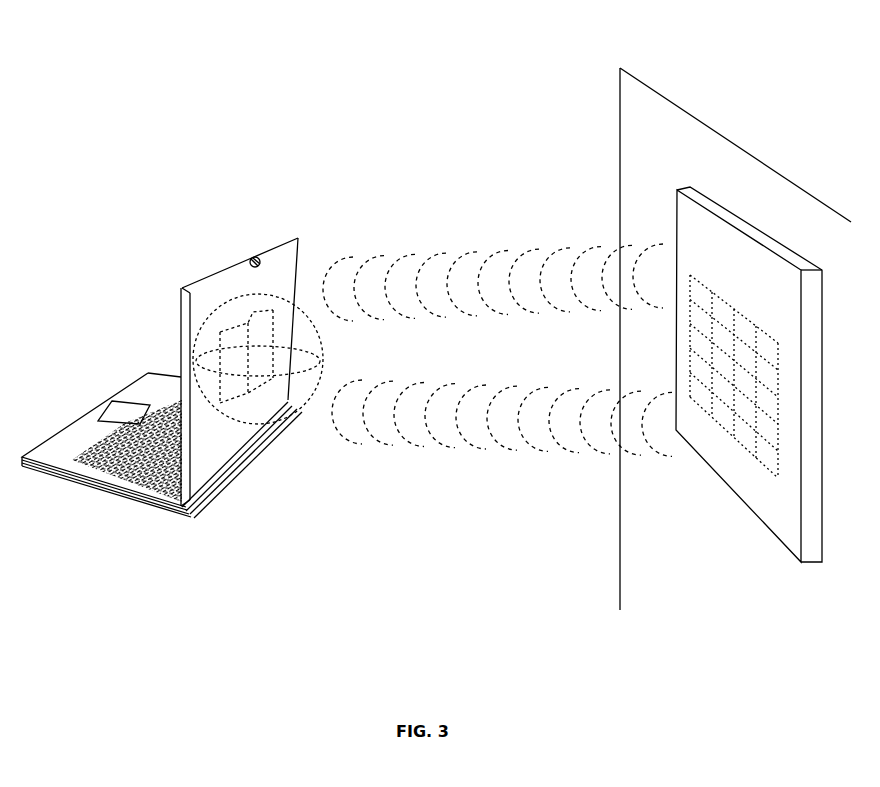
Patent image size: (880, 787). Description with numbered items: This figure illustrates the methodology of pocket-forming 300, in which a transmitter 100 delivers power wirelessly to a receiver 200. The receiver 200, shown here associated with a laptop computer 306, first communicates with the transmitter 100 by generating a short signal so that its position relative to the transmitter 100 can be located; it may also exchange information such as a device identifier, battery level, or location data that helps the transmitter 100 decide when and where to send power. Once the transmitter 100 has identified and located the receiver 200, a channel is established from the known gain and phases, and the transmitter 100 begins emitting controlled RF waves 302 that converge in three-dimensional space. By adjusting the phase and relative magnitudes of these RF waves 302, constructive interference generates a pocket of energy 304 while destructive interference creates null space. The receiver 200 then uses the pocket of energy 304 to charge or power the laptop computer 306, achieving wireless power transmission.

The transmitter 100 is at (710, 207).
The receiver 200 is at (233, 398).
The pocket-forming 300 is at (104, 116).
The RF waves 302 is at (447, 257).
The pocket of energy 304 is at (248, 292).
The laptop computer 306 is at (147, 505).